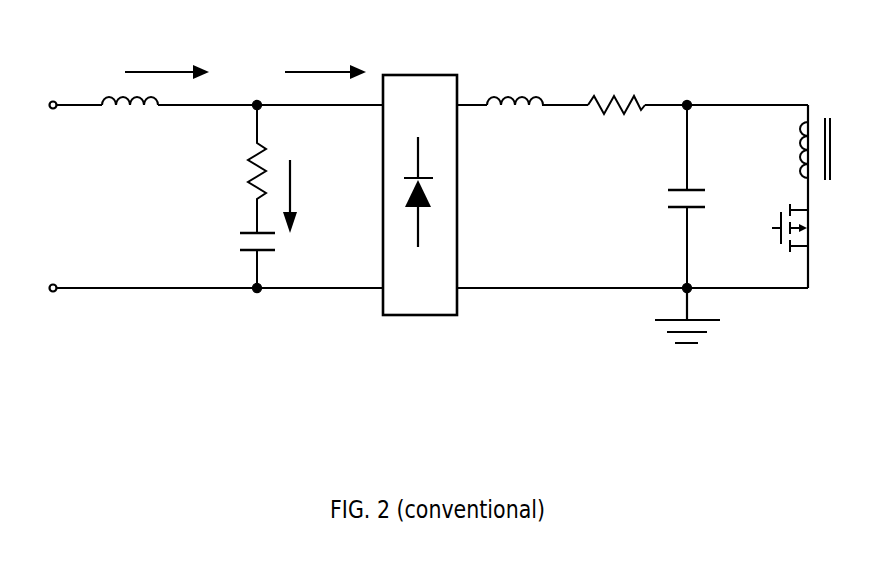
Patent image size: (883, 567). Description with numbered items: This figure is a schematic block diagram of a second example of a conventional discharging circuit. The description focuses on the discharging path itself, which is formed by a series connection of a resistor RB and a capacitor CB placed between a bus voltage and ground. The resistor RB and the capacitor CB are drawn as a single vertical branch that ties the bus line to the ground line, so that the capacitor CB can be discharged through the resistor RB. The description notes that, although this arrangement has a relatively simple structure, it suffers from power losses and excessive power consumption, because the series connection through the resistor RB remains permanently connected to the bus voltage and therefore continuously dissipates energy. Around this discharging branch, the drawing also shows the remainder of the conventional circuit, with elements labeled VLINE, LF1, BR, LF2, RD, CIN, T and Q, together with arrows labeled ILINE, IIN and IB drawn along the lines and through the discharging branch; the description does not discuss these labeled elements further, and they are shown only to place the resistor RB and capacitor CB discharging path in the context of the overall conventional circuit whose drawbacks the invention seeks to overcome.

The first filter inductor L_F1 LF1 is at (130, 126).
The line current I_LINE ILINE is at (167, 52).
The input current I_IN IIN is at (325, 52).
The line voltage V_LINE VLINE is at (54, 195).
The resistor RB is at (231, 169).
The capacitor CB is at (236, 260).
The bleeder current I_B IB is at (309, 196).
The bridge rectifier BR is at (420, 195).
The second filter inductor L_F2 LF2 is at (515, 81).
The damping resistor R_D RD is at (616, 86).
The input capacitor C_IN CIN is at (656, 196).
The transformer primary winding T is at (815, 149).
The switching transistor Q is at (790, 228).